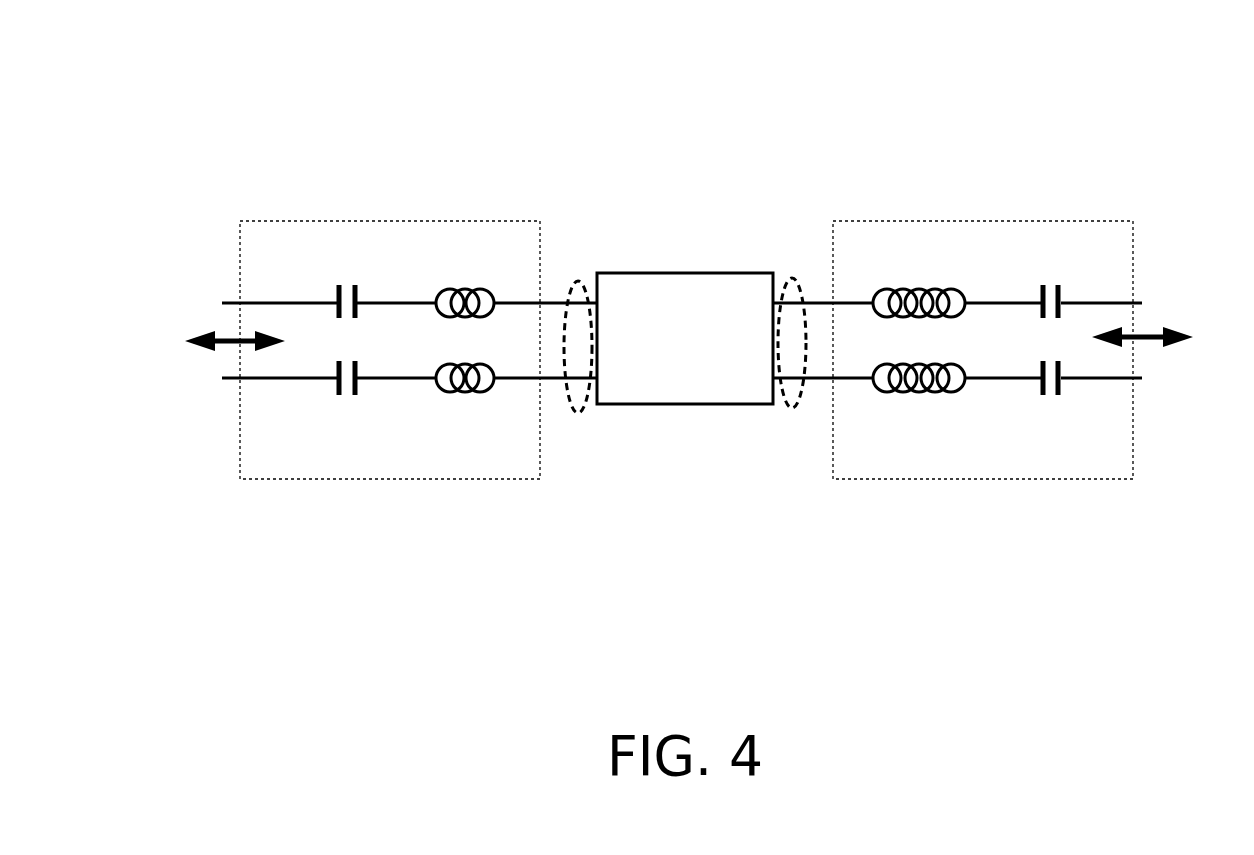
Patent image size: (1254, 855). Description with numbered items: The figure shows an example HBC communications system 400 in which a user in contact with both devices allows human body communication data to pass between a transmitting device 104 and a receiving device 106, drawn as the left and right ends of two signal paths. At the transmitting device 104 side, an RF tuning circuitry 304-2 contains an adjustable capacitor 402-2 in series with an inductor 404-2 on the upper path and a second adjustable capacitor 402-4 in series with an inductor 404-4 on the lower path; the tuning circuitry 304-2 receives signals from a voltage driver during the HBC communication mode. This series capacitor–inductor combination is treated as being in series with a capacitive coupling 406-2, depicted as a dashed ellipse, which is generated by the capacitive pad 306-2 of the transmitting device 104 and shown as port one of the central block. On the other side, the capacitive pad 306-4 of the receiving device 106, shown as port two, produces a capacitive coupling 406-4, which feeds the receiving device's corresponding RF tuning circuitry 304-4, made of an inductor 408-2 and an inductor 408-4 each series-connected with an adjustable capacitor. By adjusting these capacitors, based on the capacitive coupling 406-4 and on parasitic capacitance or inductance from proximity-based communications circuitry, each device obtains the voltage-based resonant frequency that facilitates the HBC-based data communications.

The HBC communications system 400 is at (252, 59).
The transmitting device 104 is at (175, 350).
The receiving device 106 is at (1236, 345).
The RF tuning circuitry 304-2 is at (331, 216).
The RF tuning circuitry 304-4 is at (928, 216).
The capacitive pad 306-2 is at (648, 361).
The capacitive pad 306-4 is at (761, 361).
The adjustable capacitor 402-2 is at (335, 283).
The adjustable capacitor 402-4 is at (342, 407).
The inductor 404-2 is at (449, 283).
The inductor 404-4 is at (465, 398).
The capacitive coupling 406-2 is at (573, 278).
The capacitive coupling 406-4 is at (788, 266).
The inductor 408-2 is at (915, 283).
The inductor 408-4 is at (920, 397).